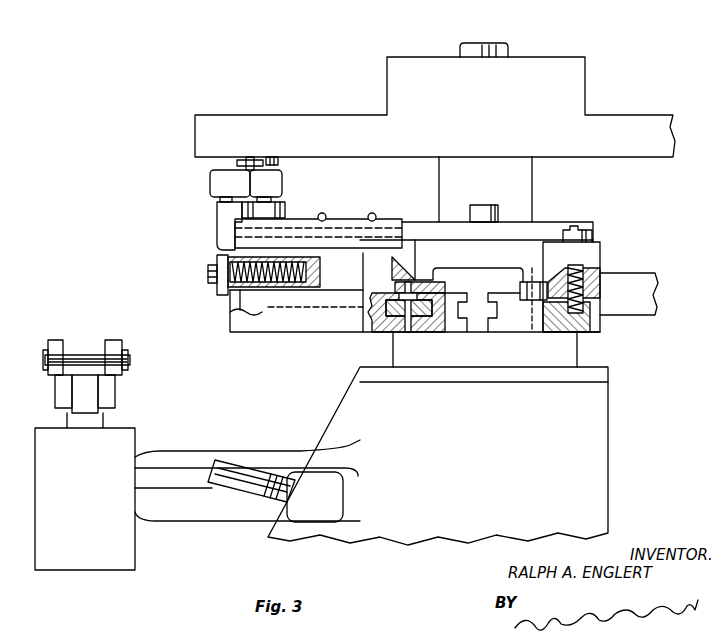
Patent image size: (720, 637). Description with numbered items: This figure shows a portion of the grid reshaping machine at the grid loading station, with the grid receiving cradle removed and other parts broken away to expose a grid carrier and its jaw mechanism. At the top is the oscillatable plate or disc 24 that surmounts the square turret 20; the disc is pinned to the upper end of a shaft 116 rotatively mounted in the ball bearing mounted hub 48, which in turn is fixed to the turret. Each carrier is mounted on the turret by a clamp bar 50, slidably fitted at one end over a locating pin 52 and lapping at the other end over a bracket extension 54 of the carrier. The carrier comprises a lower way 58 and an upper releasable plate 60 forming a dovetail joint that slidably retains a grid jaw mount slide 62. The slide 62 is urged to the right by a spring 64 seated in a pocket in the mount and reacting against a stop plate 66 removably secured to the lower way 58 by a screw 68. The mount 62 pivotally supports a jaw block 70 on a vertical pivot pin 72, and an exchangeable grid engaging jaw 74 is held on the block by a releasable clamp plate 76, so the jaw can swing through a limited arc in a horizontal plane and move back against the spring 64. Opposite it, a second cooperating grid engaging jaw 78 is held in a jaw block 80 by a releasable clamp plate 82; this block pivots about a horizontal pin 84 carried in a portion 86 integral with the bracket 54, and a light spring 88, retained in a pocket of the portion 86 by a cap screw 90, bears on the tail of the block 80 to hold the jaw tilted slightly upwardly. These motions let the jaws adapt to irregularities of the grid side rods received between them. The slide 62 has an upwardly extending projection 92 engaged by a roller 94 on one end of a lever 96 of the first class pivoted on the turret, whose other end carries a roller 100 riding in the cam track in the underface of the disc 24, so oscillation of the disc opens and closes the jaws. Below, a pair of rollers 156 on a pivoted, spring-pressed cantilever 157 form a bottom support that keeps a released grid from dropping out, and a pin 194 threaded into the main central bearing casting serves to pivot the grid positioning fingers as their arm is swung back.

The square turret 20 is at (664, 296).
The oscillatable plate or disc 24 is at (331, 115).
The hub 48 is at (438, 191).
The clamp bar 50 is at (528, 222).
The locating pin 52 is at (478, 205).
The bracket extension 54 is at (497, 252).
The lower way 58 is at (240, 313).
The upper releasable plate 60 is at (365, 219).
The grid jaw mount slide 62 is at (298, 333).
The spring 64 is at (320, 280).
The stop plate 66 is at (217, 290).
The screw 68 is at (208, 274).
The jaw block 70 is at (438, 333).
The vertical pivot pin 72 is at (405, 330).
The grid engaging jaw 74 is at (455, 333).
The releasable clamp plate 76 is at (426, 282).
The second cooperating grid engaging jaw 78 is at (506, 333).
The jaw block 80 is at (535, 333).
The releasable clamp plate 82 is at (532, 282).
The horizontal pin 84 is at (548, 322).
The portion 86 is at (600, 326).
The light spring 88 is at (584, 288).
The cap screw 90 is at (595, 230).
The upwardly extending projection 92 is at (240, 213).
The roller 94 is at (287, 212).
The lever 96 is at (210, 185).
The roller 100 is at (278, 161).
The shaft 116 is at (484, 43).
The rollers 156 is at (112, 340).
The cantilever 157 is at (115, 391).
The pins 194 is at (228, 460).